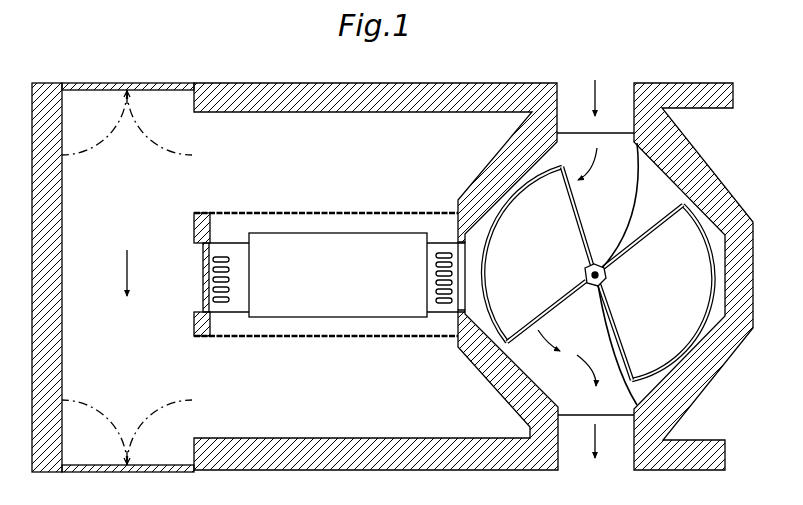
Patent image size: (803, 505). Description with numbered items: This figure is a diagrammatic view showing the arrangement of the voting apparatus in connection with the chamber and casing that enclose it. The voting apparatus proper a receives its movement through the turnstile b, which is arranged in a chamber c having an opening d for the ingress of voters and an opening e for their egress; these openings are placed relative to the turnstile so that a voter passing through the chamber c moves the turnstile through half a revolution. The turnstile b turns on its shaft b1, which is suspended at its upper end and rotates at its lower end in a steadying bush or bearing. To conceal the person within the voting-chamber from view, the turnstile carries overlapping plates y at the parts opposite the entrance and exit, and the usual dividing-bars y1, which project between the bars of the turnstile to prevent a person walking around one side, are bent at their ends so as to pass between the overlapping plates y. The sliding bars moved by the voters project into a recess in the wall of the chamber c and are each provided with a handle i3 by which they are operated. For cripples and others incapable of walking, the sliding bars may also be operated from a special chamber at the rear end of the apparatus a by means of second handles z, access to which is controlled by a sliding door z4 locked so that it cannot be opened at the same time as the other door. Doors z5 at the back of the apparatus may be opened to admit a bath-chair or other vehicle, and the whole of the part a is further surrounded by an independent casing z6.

The voting apparatus proper a is at (338, 275).
The turnstile b is at (552, 301).
The shaft of the turnstile b1 is at (606, 280).
The chamber c is at (572, 267).
The opening for ingress d is at (595, 106).
The opening for egress e is at (596, 439).
The overlapping plates y is at (487, 239).
The dividing-bars y1 is at (635, 195).
The second handle z is at (231, 300).
The handle i3 is at (434, 300).
The sliding door z4 is at (314, 277).
The doors z5 is at (136, 83).
The independent casing z6 is at (355, 213).